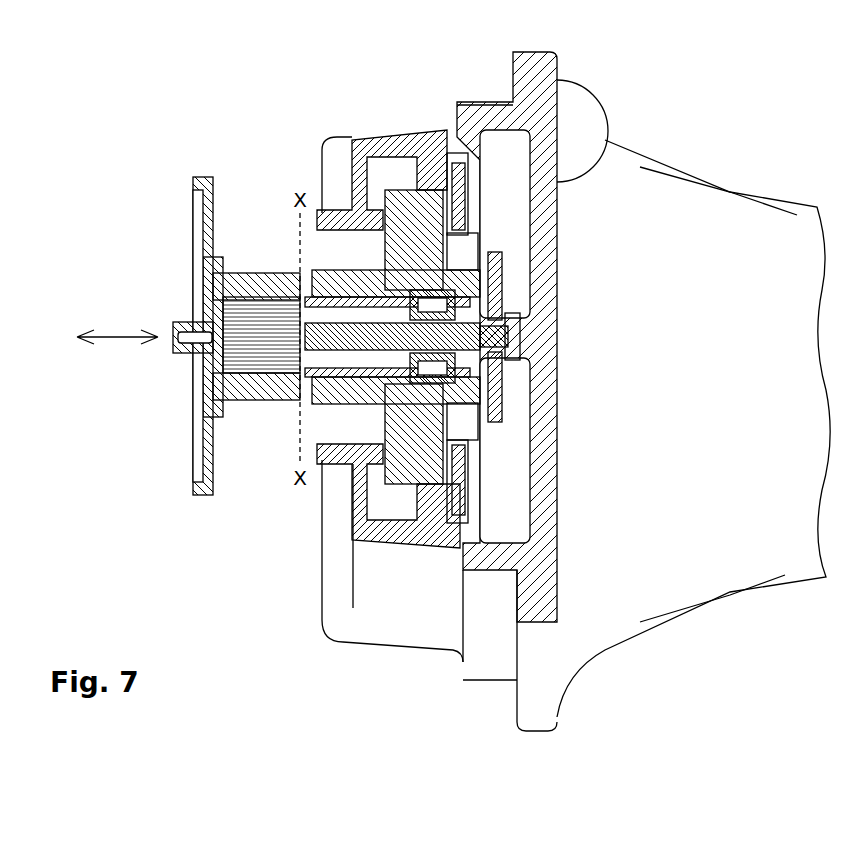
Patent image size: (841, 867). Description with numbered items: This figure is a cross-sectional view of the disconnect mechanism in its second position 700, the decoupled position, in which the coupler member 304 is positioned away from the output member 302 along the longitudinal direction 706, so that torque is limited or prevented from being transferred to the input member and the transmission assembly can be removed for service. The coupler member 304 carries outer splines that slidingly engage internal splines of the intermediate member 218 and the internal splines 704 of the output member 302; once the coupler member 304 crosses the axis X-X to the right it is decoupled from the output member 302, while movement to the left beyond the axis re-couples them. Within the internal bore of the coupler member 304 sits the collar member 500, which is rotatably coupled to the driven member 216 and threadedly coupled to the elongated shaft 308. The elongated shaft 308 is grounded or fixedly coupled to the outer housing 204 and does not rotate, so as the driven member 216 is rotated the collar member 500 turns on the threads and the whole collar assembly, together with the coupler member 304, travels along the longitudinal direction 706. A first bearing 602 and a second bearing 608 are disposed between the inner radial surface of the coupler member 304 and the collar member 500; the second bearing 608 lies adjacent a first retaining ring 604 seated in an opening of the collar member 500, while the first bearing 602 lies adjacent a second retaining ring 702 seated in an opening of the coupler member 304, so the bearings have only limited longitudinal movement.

The outer housing 204 is at (493, 112).
The driven member 216 is at (497, 262).
The intermediate member 218 is at (438, 290).
The output member 302 is at (195, 466).
The coupler member 304 is at (340, 297).
The elongated shaft 308 is at (355, 348).
The collar member 500 is at (505, 340).
The first bearing 602 is at (440, 297).
The first retaining ring 604 is at (423, 205).
The second bearing 608 is at (353, 464).
The second position 700 is at (157, 215).
The second retaining ring 702 is at (457, 372).
The internal splines 704 is at (268, 310).
The longitudinal direction 706 is at (113, 339).